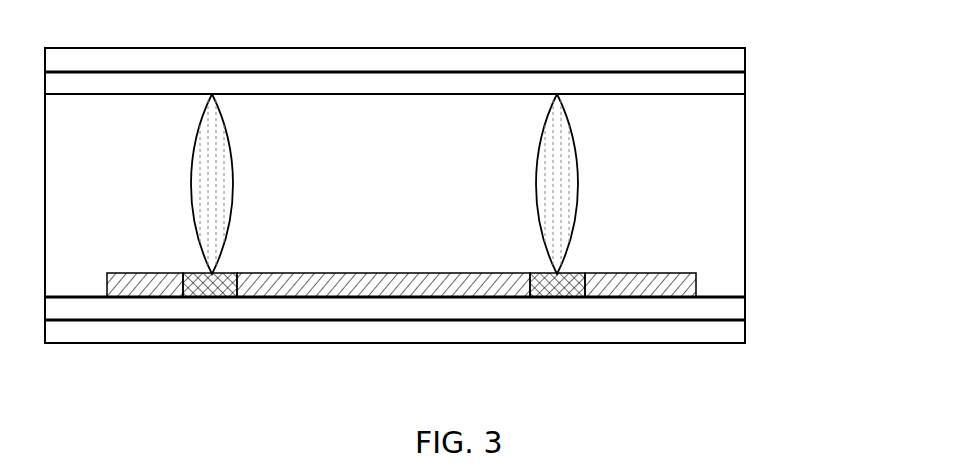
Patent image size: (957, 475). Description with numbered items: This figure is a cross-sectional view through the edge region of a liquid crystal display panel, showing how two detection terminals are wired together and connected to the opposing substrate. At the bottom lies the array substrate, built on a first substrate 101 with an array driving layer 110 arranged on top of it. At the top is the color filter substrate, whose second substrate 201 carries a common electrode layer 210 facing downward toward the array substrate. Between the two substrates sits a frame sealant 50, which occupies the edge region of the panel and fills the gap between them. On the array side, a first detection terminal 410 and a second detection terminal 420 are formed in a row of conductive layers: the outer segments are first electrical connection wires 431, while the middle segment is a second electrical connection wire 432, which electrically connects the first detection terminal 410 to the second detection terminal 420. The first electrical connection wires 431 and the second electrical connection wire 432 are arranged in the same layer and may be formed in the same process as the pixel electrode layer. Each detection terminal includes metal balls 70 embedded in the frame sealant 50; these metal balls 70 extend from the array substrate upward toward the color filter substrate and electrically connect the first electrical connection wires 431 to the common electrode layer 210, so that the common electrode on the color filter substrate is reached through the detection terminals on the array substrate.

The metal balls 70 is at (212, 123).
The second substrate 201 is at (722, 64).
The common electrode layer 210 is at (722, 89).
The frame sealant 50 is at (722, 206).
The array driving layer 110 is at (722, 316).
The first substrate 101 is at (722, 342).
The first electrical connection wires 431 is at (155, 290).
The first detection terminal 410 is at (220, 290).
The second electrical connection wire 432 is at (385, 288).
The second detection terminal 420 is at (547, 293).